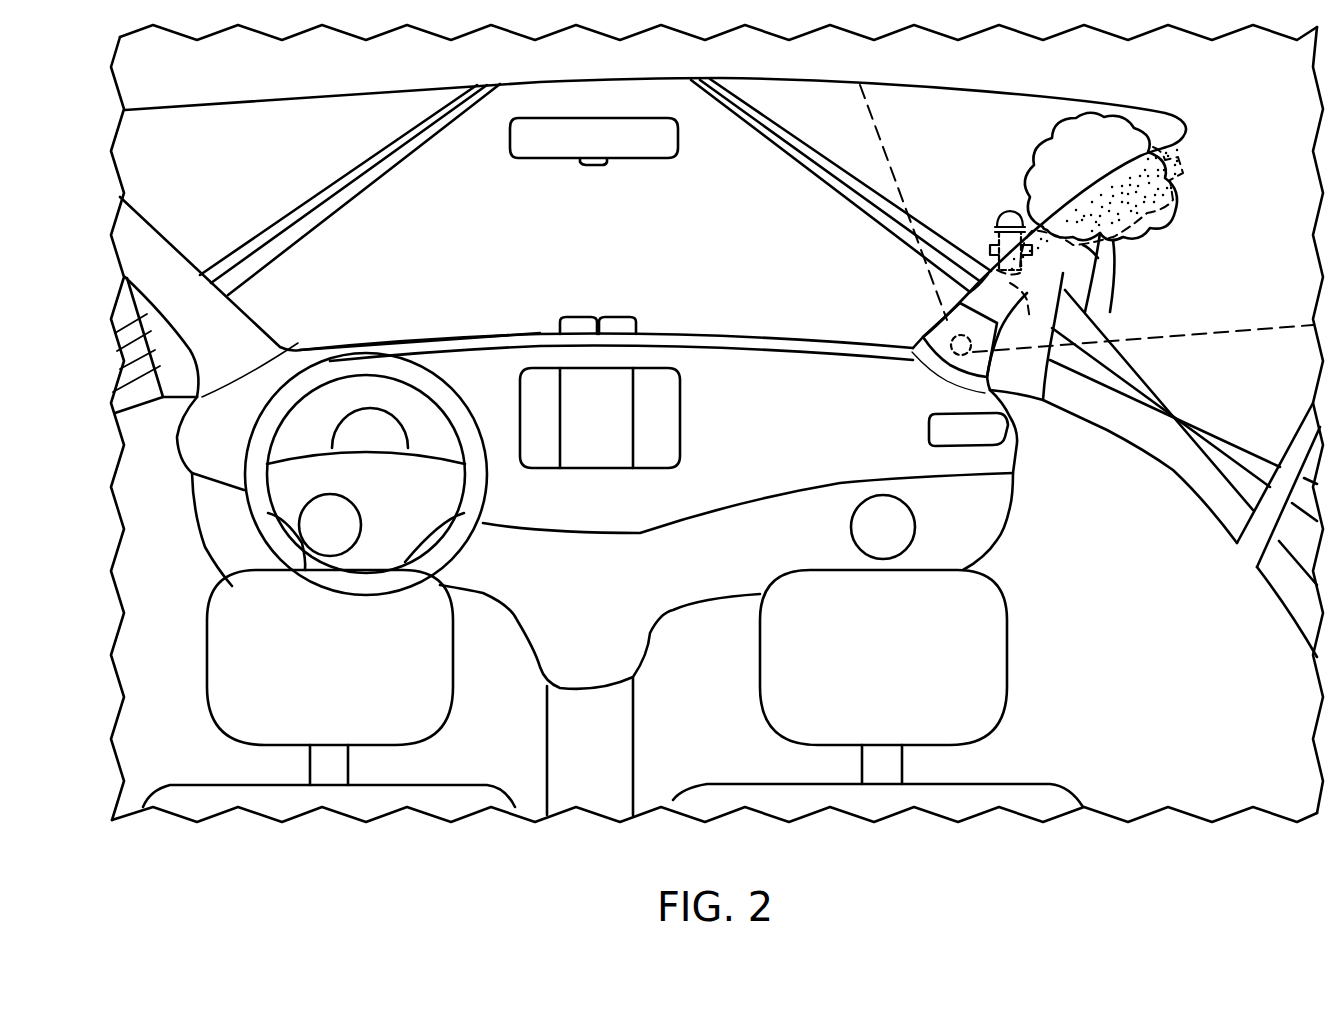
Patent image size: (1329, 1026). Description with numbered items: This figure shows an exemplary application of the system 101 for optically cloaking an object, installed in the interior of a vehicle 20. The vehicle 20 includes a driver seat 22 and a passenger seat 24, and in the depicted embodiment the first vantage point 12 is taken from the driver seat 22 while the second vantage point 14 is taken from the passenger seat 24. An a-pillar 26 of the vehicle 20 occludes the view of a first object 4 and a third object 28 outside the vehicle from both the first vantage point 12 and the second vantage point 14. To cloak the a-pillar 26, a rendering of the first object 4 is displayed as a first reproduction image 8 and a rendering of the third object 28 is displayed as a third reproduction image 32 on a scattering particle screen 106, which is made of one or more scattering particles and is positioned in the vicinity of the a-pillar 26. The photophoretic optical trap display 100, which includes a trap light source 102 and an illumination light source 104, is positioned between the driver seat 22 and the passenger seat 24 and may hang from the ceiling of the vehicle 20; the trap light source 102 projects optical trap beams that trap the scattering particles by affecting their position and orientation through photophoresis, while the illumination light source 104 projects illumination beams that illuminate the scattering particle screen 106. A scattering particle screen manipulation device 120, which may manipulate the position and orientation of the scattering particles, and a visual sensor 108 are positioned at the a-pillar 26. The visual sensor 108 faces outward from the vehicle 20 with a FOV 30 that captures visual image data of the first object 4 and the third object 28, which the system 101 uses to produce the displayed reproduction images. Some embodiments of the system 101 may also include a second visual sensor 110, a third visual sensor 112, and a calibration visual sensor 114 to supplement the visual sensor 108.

The first object 4 is at (1052, 145).
The first reproduction image 8 is at (1183, 152).
The first vantage point 12 is at (360, 507).
The second vantage point 14 is at (914, 522).
The vehicle 20 is at (767, 324).
The driver seat 22 is at (453, 659).
The passenger seat 24 is at (1008, 659).
The a-pillar 26 is at (980, 278).
The third object 28 is at (1010, 212).
The FOV 30 is at (1250, 333).
The third reproduction image 32 is at (1027, 300).
The photophoretic optical trap display 100 is at (662, 448).
The system 101 is at (506, 251).
The trap light source 102 is at (541, 462).
The illumination light source 104 is at (702, 423).
The scattering particle screen 106 is at (1155, 228).
The visual sensor 108 is at (948, 343).
The second visual sensor 110 is at (580, 318).
The third visual sensor 112 is at (617, 318).
The calibration visual sensor 114 is at (598, 450).
The scattering particle screen manipulation device 120 is at (957, 305).